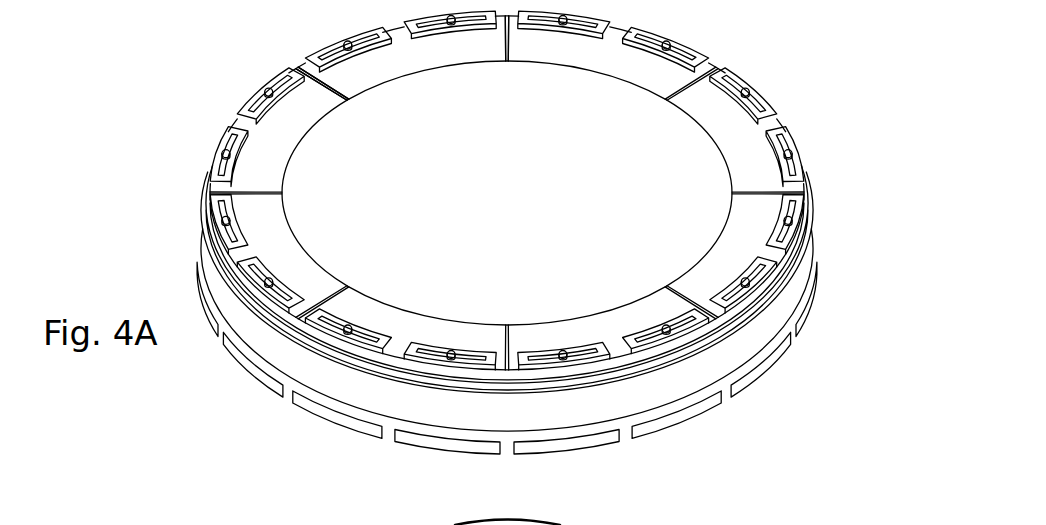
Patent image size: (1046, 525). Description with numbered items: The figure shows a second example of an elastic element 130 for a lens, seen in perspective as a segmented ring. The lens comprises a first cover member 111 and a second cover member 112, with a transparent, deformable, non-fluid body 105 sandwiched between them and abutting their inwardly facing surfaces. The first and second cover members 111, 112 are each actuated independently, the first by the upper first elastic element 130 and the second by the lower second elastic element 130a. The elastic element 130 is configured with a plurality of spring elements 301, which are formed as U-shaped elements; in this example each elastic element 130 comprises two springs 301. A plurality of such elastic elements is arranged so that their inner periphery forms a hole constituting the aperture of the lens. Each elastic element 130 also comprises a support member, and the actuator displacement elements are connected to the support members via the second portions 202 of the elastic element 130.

The elastic element 130 is at (752, 143).
The second portion 202 is at (640, 70).
The spring element 301 is at (768, 377).
The first cover member 111 is at (357, 367).
The second cover member 112 is at (355, 413).
The non-fluid body 105 is at (490, 408).
The second elastic element 130a is at (703, 415).